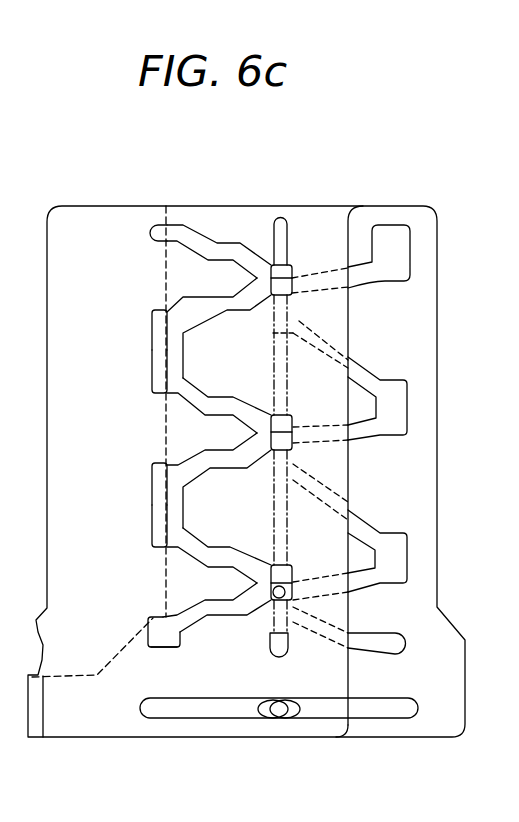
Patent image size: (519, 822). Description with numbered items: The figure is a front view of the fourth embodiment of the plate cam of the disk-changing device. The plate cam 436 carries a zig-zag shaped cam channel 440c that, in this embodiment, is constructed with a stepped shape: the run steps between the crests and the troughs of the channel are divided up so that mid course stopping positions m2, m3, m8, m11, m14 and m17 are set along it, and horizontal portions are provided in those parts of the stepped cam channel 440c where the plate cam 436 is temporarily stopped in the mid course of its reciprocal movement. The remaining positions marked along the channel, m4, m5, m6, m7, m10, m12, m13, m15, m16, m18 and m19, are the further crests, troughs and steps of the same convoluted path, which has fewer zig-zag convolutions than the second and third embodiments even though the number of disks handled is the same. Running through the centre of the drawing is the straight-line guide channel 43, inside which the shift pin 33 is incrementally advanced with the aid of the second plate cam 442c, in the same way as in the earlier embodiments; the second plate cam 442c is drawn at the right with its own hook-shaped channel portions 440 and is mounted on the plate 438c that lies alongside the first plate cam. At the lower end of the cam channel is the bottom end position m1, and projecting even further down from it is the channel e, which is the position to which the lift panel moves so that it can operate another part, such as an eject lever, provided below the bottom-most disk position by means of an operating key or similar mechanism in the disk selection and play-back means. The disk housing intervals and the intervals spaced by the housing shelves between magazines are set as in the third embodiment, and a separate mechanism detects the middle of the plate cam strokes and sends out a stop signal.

The plate cam 436 is at (93, 222).
The cover plate 438c is at (366, 212).
The cam channel 440c is at (192, 225).
The second plate cam 442c is at (398, 285).
The hook tab 440 is at (329, 519).
The straight-line guide channel 43 is at (283, 215).
The shift pin 33 is at (271, 625).
The channel e is at (163, 647).
The bottom end position m1 is at (148, 617).
The mid course stopping position m2 is at (223, 610).
The mid course stopping position m3 is at (294, 600).
The conductor segment m4 is at (284, 568).
The conductor segment m5 is at (220, 548).
The conductor segment m6 is at (158, 532).
The conductor segment m7 is at (158, 475).
The mid course stopping position m8 is at (230, 452).
The conductor segment m10 is at (284, 418).
The mid course stopping position m11 is at (219, 406).
The conductor segment m12 is at (160, 375).
The conductor segment m13 is at (158, 318).
The mid course stopping position m14 is at (230, 307).
The conductor segment m15 is at (286, 288).
The conductor segment m16 is at (287, 268).
The mid course stopping position m17 is at (232, 250).
The conductor segment m18 is at (156, 240).
The conductor segment m19 is at (284, 442).